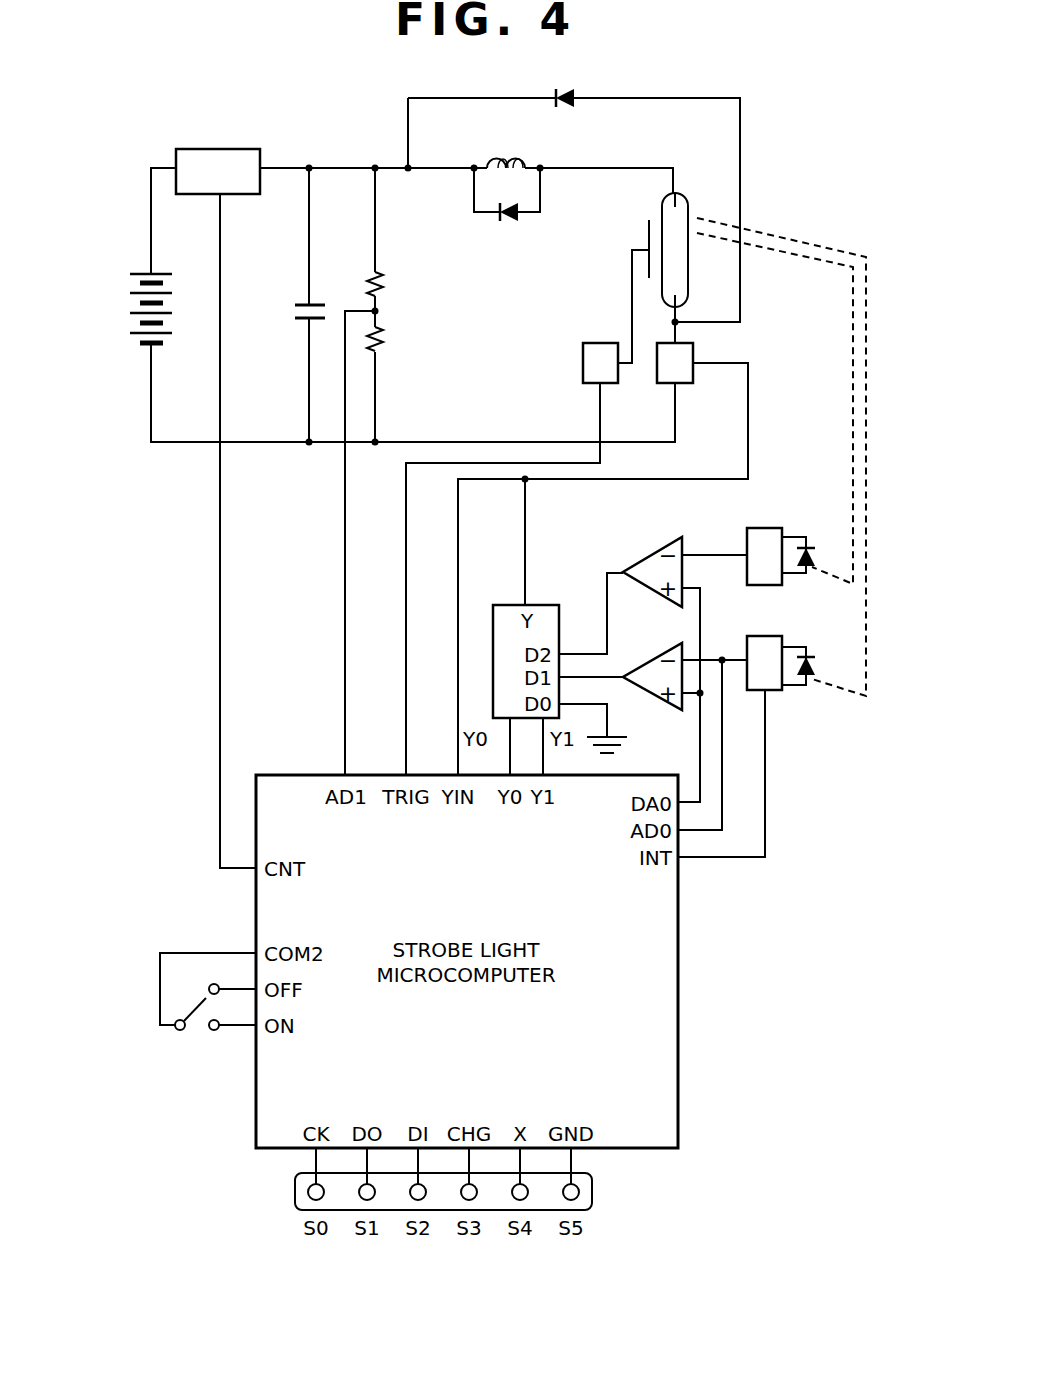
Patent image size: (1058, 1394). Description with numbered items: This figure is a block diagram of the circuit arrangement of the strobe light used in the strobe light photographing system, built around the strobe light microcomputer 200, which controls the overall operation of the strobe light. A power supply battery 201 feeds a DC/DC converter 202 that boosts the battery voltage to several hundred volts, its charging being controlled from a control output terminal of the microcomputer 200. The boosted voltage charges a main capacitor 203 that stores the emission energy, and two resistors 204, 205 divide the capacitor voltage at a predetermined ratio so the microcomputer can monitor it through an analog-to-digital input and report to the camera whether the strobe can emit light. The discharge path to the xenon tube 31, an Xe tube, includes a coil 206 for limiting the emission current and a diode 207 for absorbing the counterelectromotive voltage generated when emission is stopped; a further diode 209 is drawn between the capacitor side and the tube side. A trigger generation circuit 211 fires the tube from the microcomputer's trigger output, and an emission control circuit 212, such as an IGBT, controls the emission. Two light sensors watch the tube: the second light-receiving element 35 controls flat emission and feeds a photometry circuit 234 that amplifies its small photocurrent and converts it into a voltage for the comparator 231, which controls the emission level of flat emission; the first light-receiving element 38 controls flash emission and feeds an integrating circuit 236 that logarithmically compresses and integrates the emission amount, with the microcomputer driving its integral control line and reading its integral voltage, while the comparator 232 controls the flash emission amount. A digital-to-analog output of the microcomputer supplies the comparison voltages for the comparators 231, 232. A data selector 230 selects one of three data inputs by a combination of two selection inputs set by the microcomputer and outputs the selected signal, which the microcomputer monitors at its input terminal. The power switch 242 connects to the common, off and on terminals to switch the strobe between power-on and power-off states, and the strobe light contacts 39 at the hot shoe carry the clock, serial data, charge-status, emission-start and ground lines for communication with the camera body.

The xenon tube 31 is at (688, 201).
The second light-receiving element 35 is at (808, 569).
The first light-receiving element 38 is at (808, 678).
The strobe light contacts 39 is at (295, 1190).
The strobe light microcomputer 200 is at (256, 1106).
The power supply battery 201 is at (141, 272).
The DC/DC converter 202 is at (225, 149).
The main capacitor 203 is at (295, 302).
The resistor 204 is at (392, 286).
The resistor 205 is at (392, 342).
The coil 206 is at (494, 155).
The diode 207 is at (515, 223).
The diode 209 is at (583, 92).
The trigger generation circuit 211 is at (622, 385).
The emission control circuit 212 is at (695, 385).
The data selector 230 is at (506, 604).
The comparator 231 is at (655, 548).
The comparator 232 is at (655, 654).
The photometry circuit 234 is at (745, 529).
The integrating circuit 236 is at (747, 636).
The power switch 242 is at (199, 1035).